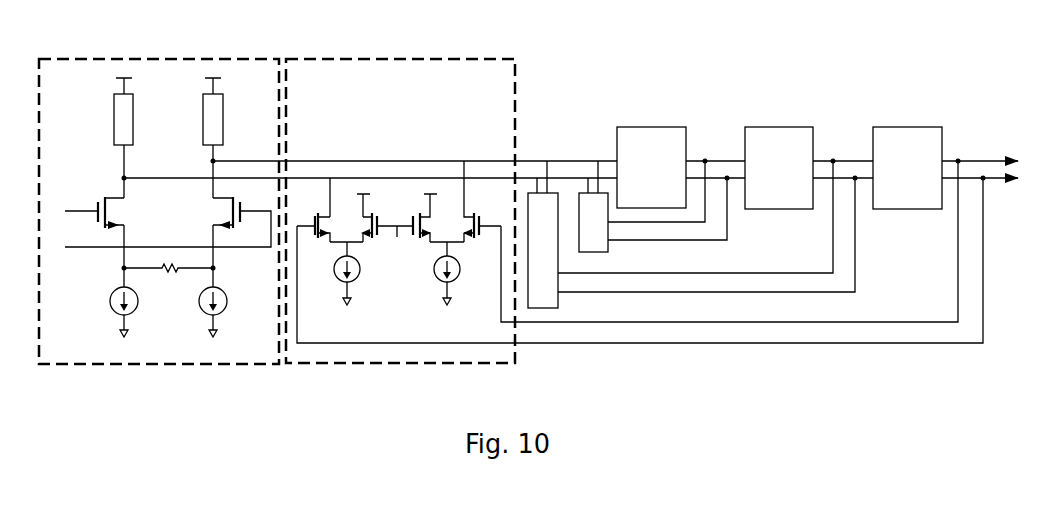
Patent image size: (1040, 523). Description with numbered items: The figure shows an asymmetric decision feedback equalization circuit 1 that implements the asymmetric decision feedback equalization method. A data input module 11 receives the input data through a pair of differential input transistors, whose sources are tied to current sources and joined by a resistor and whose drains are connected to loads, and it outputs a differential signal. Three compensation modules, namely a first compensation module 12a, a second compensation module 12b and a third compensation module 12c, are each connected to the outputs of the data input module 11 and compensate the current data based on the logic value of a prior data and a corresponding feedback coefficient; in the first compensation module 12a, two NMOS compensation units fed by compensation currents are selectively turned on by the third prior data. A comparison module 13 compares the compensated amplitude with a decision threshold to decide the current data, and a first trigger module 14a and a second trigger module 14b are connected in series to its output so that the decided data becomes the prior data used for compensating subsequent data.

The asymmetric decision feedback equalization circuit 1 is at (750, 58).
The data input module 11 is at (236, 58).
The first compensation module 12a is at (328, 57).
The second compensation module 12b is at (691, 234).
The third compensation module 12c is at (653, 206).
The comparison module 13 is at (648, 127).
The first trigger module 14a is at (779, 127).
The second trigger module 14b is at (908, 127).